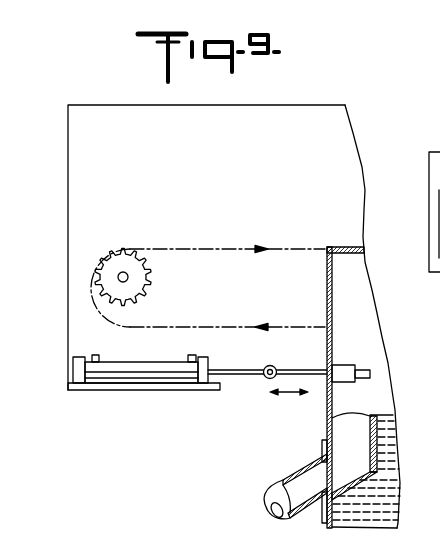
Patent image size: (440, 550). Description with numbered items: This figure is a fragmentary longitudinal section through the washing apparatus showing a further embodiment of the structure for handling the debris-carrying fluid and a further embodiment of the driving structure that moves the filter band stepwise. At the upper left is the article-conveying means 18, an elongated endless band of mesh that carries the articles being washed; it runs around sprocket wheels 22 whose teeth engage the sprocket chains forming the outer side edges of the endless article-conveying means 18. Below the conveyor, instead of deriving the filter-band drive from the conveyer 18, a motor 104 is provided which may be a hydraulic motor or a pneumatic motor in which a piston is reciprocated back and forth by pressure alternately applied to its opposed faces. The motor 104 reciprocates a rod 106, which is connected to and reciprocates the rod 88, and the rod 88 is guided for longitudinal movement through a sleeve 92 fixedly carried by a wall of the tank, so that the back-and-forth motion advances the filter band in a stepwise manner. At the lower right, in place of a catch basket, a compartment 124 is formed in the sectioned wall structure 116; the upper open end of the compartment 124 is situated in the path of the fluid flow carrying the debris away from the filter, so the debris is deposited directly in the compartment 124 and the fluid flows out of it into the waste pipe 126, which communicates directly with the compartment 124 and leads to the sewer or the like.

The article-conveying means 18 is at (218, 248).
The sprocket wheel 22 is at (137, 263).
The rod 88 is at (305, 352).
The sleeve 92 is at (347, 365).
The motor 104 is at (132, 381).
The rod 106 is at (248, 352).
The housing wall 116 is at (371, 444).
The compartment 124 is at (332, 418).
The waste pipe 126 is at (275, 486).